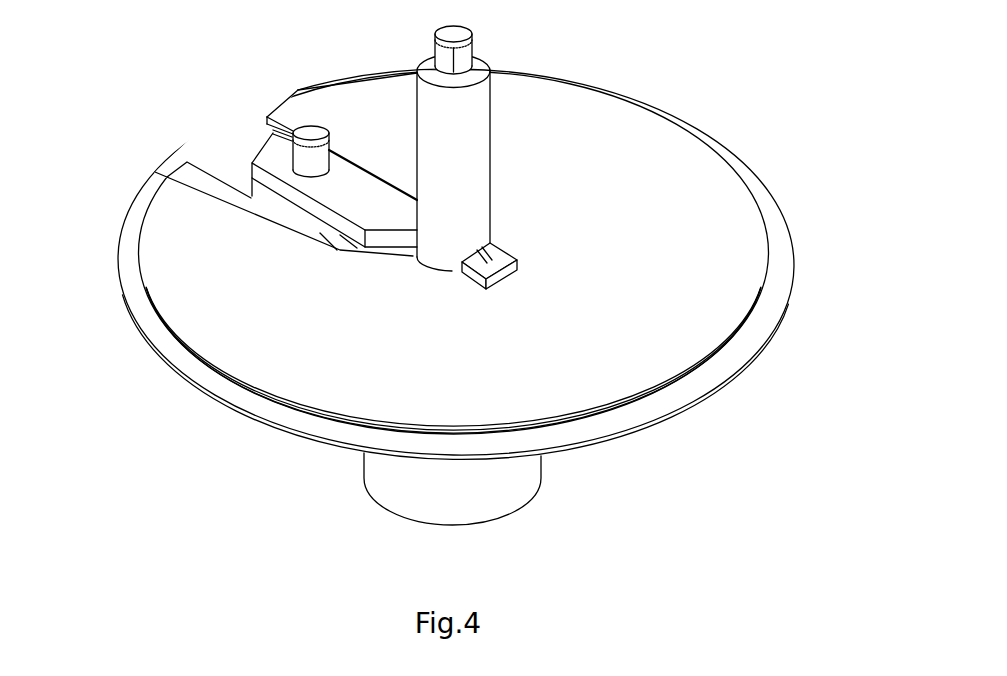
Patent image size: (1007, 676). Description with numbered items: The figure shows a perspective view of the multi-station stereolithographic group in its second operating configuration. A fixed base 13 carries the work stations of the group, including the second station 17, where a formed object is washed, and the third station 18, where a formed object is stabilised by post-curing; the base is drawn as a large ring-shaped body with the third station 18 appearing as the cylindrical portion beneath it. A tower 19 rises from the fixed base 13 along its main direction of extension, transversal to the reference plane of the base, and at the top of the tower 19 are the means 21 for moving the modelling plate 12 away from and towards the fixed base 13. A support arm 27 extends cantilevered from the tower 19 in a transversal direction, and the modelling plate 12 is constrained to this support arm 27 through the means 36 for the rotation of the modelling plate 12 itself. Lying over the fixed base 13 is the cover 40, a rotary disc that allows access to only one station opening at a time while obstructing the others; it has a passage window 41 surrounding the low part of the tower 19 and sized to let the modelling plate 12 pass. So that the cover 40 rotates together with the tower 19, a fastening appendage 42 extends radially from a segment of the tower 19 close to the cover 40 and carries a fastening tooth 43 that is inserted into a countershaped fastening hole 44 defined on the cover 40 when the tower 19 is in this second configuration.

The modelling plate 12 is at (265, 198).
The fixed base 13 is at (792, 327).
The second station 17 is at (703, 408).
The third station 18 is at (540, 497).
The tower 19 is at (468, 117).
The means for the movement of the modelling plate 21 is at (482, 33).
The support arm 27 is at (373, 204).
The means for the rotation of the modelling plate 36 is at (300, 110).
The cover 40 is at (703, 192).
The passage window 41 is at (187, 163).
The fastening appendage 42 is at (488, 262).
The fastening tooth 43 is at (518, 264).
The fastening hole 44 is at (510, 276).